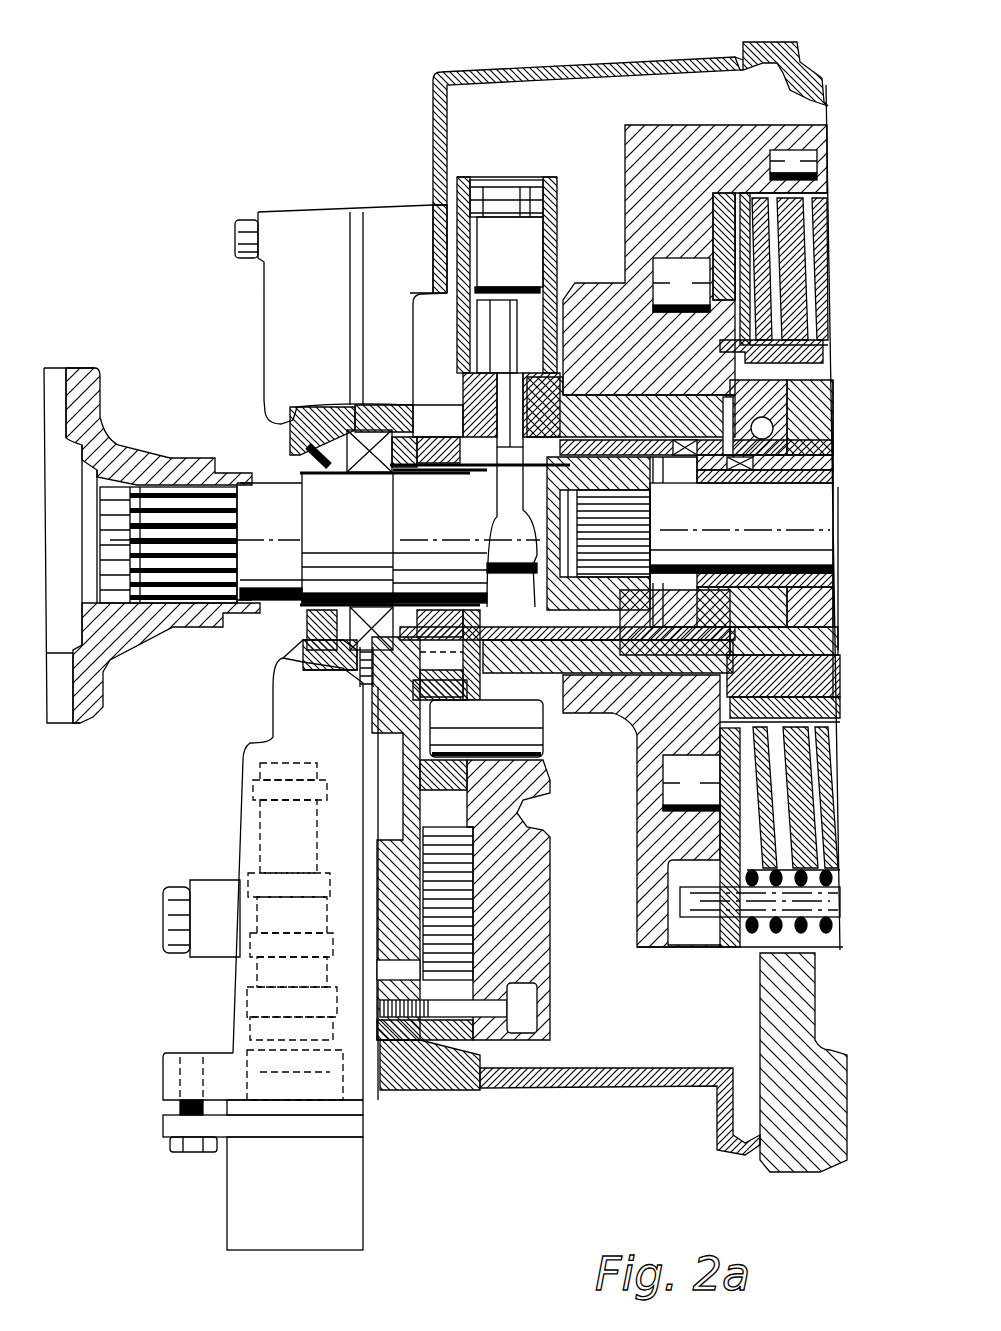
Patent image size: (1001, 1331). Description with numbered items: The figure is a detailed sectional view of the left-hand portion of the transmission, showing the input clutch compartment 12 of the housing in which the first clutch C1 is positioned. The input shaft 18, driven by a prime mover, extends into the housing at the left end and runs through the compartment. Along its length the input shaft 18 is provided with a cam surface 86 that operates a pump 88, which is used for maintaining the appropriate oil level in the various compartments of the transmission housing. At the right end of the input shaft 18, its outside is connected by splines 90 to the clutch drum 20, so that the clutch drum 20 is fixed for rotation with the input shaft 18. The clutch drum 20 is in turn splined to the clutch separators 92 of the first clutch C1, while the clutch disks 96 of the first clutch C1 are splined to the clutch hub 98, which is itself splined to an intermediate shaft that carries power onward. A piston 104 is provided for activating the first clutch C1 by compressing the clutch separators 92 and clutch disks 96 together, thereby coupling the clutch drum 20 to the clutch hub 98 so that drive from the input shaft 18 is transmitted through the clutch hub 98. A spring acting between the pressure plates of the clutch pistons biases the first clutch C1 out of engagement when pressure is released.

The input clutch compartment 12 is at (660, 1050).
The input shaft 18 is at (269, 508).
The clutch drum 20 is at (650, 125).
The cam surface 86 is at (507, 527).
The pump 88 is at (503, 184).
The splines 90 is at (829, 452).
The clutch separators 92 is at (760, 195).
The clutch disks 96 is at (745, 268).
The clutch hub 98 is at (733, 373).
The piston 104 is at (667, 285).
The first clutch C1 is at (720, 182).